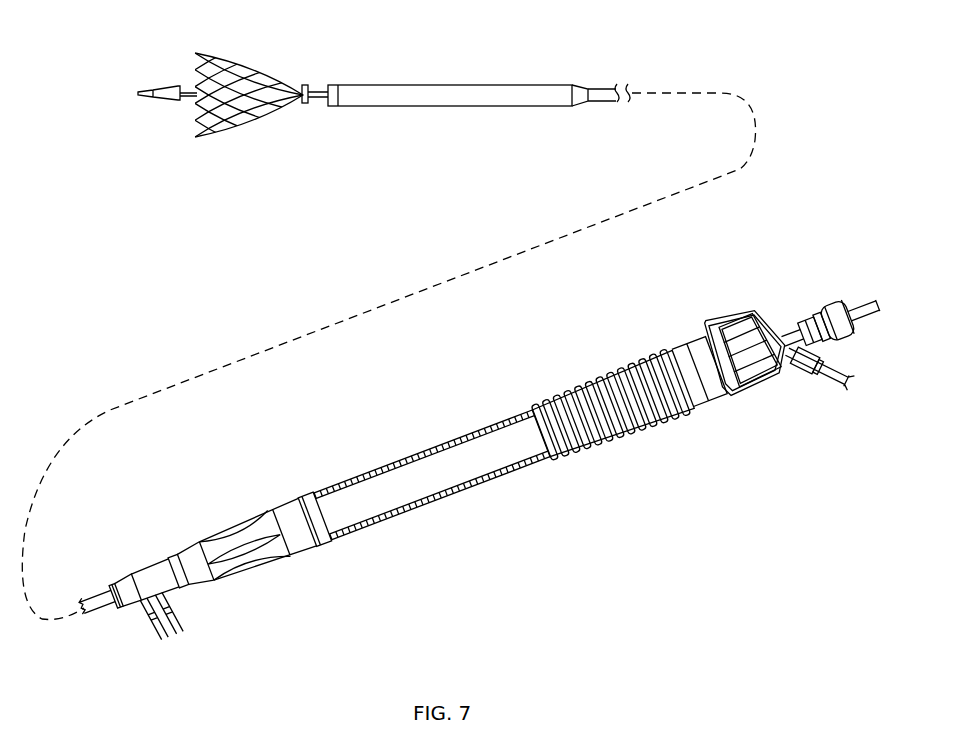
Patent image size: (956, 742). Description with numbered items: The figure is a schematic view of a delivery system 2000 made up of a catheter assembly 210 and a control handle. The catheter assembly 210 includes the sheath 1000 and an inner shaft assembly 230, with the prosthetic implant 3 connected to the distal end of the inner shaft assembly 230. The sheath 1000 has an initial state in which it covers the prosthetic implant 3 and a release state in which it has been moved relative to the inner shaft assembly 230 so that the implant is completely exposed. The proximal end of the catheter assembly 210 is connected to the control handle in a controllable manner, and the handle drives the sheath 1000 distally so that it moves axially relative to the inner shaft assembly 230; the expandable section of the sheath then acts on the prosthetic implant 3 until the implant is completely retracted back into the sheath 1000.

The prosthetic implant 3 is at (258, 124).
The catheter assembly 210 is at (399, 62).
The inner shaft assembly 230 is at (318, 90).
The sheath 1000 is at (463, 85).
The delivery system 2000 is at (557, 576).